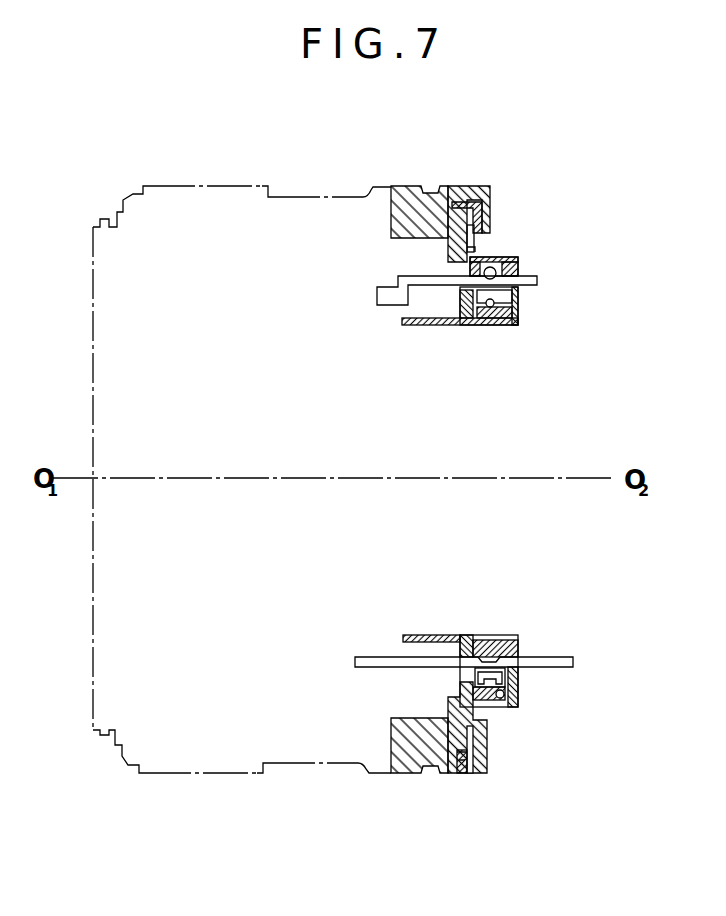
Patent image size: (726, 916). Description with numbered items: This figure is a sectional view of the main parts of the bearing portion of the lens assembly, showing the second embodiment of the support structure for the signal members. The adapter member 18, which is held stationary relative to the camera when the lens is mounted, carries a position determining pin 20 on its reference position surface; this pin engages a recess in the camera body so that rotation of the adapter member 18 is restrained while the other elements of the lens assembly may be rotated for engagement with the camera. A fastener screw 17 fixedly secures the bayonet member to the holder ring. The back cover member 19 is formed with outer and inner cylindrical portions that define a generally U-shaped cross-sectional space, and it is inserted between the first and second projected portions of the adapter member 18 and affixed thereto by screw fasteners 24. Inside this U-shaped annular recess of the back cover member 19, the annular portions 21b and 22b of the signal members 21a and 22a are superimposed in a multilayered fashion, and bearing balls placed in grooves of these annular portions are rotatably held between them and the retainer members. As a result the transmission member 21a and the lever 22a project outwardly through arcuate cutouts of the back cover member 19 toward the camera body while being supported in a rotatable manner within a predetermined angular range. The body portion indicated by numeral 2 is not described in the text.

The cover plate 2 is at (488, 325).
The fastener screw 17 is at (462, 775).
The adapter member 18 is at (448, 255).
The back cover member 19 is at (518, 267).
The position determining pin 20 is at (470, 245).
The transmission member 21a is at (537, 280).
The annular portion 21b is at (518, 676).
The lever 22a is at (600, 651).
The annular portion 22b is at (517, 298).
The screw fasteners 24 is at (505, 707).